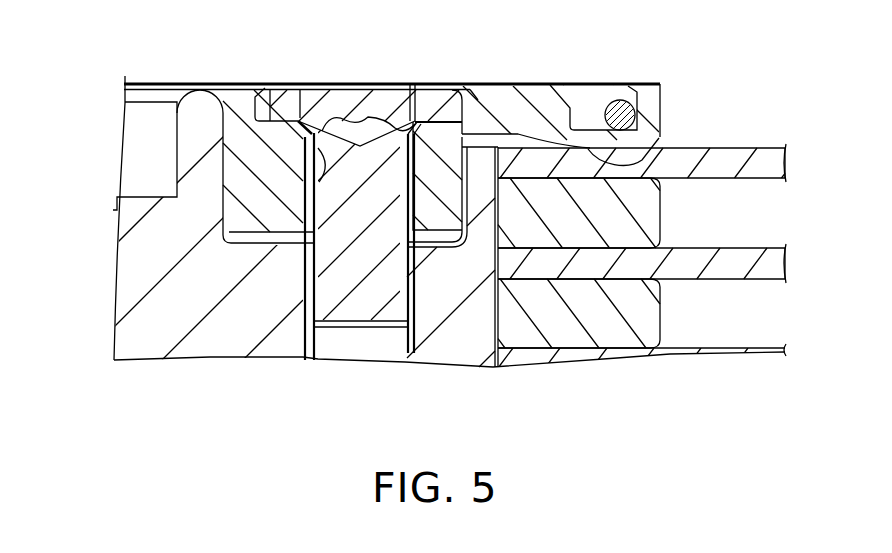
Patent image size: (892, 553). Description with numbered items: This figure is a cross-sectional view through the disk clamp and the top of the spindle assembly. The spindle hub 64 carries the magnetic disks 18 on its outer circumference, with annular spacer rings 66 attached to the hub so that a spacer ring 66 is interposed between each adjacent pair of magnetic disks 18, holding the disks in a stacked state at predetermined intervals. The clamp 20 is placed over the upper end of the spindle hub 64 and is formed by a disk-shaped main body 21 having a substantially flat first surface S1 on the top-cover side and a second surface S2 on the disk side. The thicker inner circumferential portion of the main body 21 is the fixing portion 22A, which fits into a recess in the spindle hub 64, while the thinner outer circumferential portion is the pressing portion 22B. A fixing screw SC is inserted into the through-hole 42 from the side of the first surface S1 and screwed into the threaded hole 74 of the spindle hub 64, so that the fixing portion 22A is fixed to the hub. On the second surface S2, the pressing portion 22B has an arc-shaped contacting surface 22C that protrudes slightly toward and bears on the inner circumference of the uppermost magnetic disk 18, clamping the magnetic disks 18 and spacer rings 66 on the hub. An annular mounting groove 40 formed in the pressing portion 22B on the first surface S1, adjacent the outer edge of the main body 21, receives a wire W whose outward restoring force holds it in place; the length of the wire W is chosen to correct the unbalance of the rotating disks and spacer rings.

The magnetic disk 18 is at (777, 164).
The clamp 20 is at (498, 82).
The main body 21 is at (476, 87).
The fixing portion 22A is at (273, 220).
The pressing portion 22B is at (545, 135).
The contacting surface 22C is at (660, 147).
The mounting groove 40 is at (581, 88).
The through-hole 42 is at (322, 140).
The spindle hub 64 is at (214, 359).
The spacer ring 66 is at (649, 214).
The threaded hole 74 is at (397, 343).
The first surface S1 is at (552, 88).
The second surface S2 is at (243, 235).
The fixing screw SC is at (373, 151).
The wire W is at (620, 100).